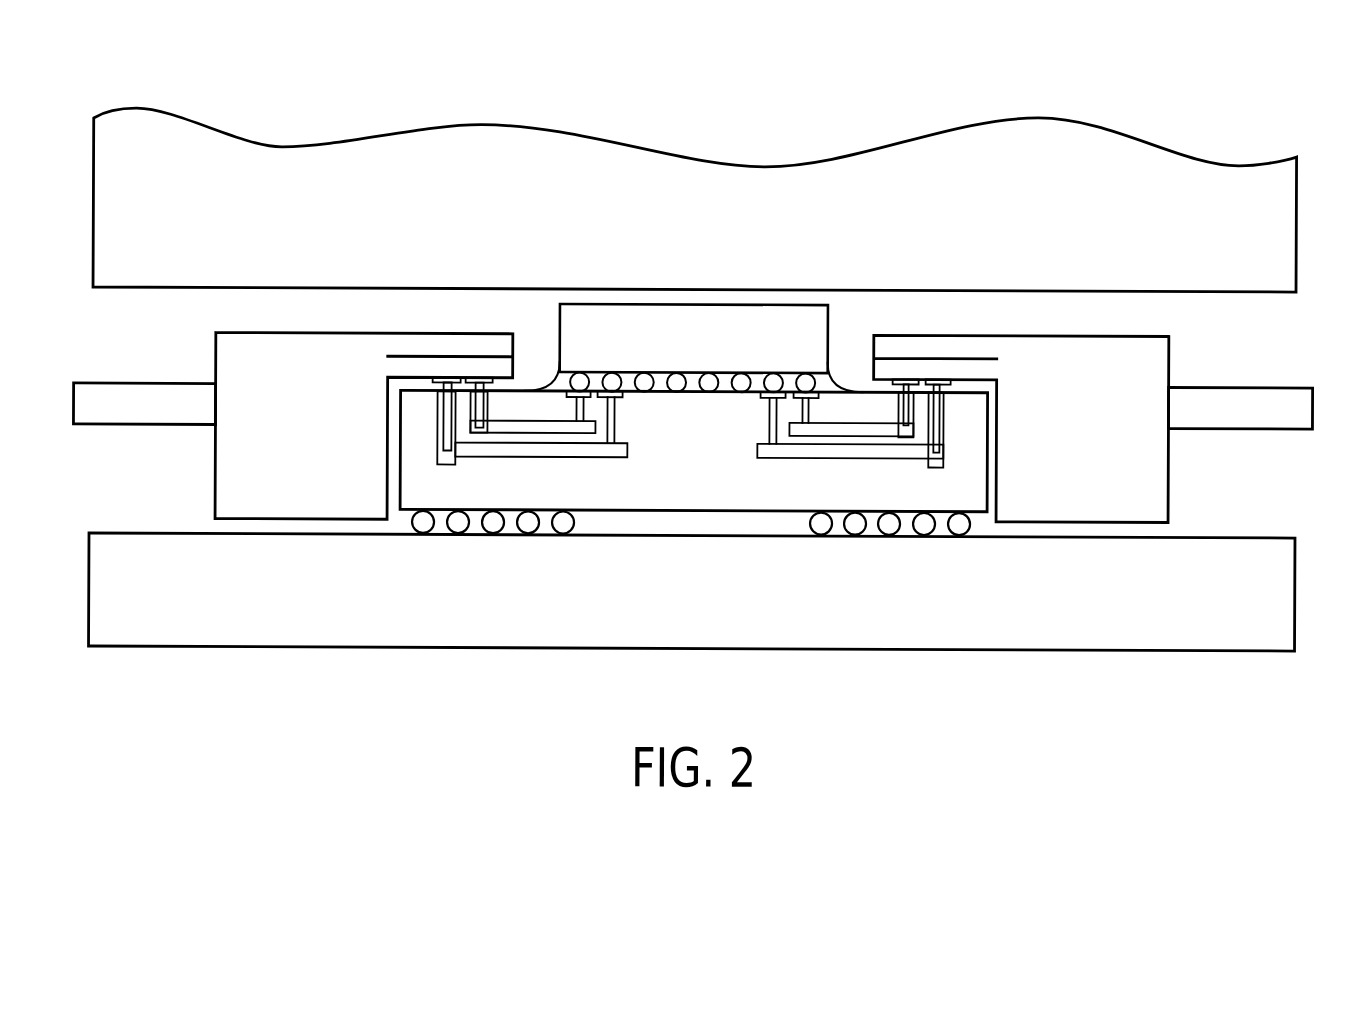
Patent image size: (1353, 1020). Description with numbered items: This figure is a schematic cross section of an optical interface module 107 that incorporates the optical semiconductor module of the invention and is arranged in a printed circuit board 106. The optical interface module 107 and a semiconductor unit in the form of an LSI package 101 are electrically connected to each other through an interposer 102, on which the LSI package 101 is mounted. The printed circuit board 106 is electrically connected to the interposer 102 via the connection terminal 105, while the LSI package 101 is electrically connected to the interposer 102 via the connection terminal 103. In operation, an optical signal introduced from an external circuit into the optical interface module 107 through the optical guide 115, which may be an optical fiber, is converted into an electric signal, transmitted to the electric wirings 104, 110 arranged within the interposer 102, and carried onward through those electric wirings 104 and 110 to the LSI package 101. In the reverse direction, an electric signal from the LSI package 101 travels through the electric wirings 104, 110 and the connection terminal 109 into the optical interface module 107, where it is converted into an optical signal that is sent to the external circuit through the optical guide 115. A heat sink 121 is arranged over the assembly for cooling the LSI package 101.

The LSI package 101 is at (645, 316).
The interposer 102 is at (641, 488).
The connection terminal 103 is at (580, 376).
The electric wiring 104 is at (780, 447).
The connection terminal 105 is at (855, 522).
The printed circuit board 106 is at (1065, 629).
The optical interface module 107 is at (899, 334).
The connection terminal 109 is at (938, 381).
The electric wiring 110 is at (940, 451).
The optical guide 115 is at (1250, 390).
The heat sink 121 is at (275, 167).